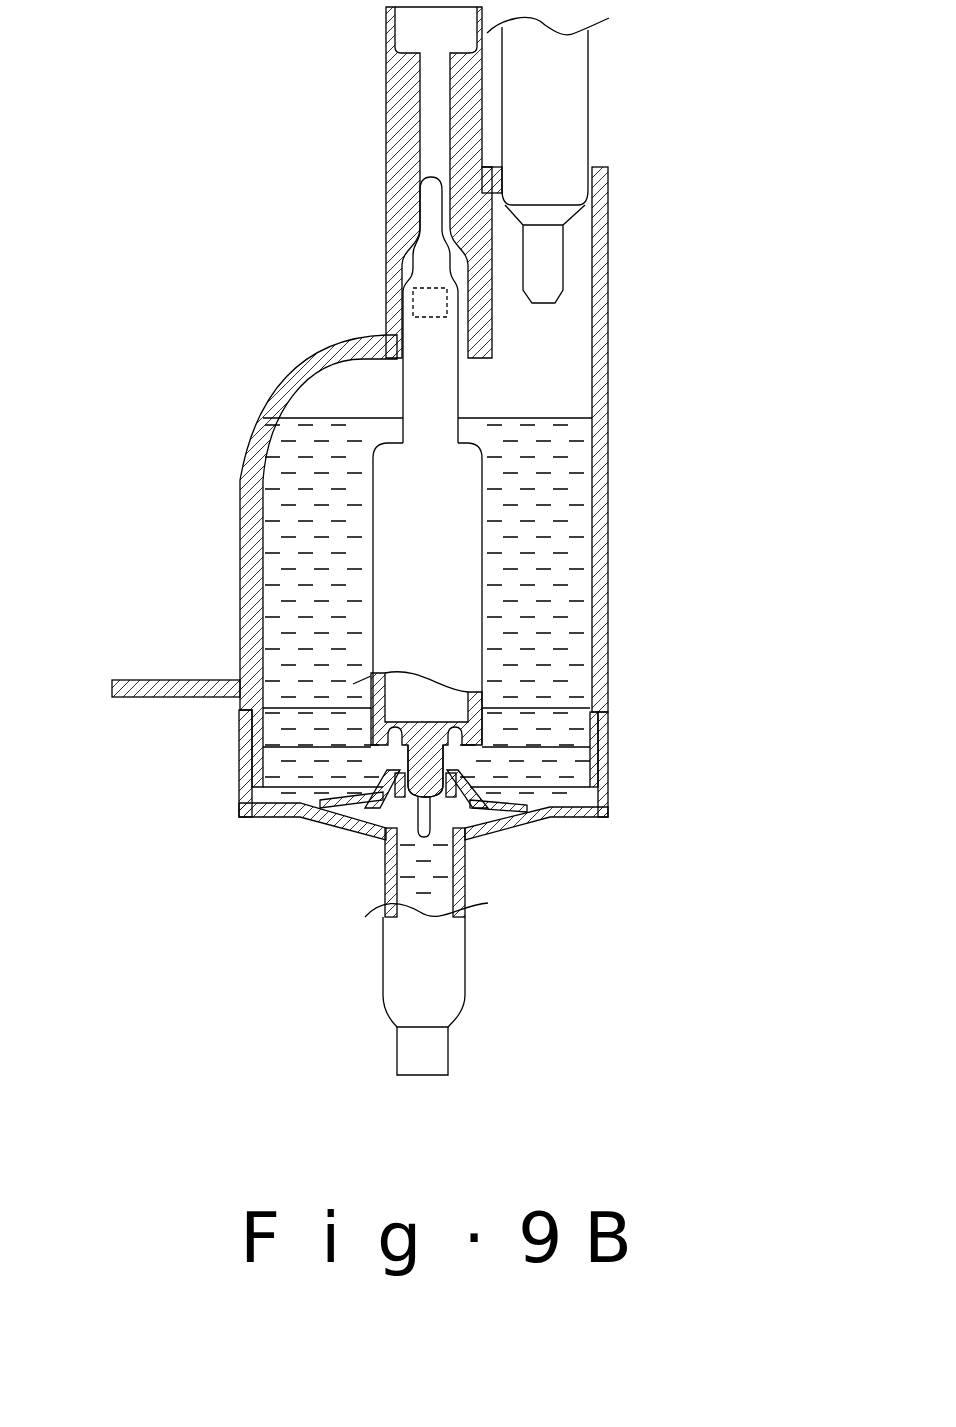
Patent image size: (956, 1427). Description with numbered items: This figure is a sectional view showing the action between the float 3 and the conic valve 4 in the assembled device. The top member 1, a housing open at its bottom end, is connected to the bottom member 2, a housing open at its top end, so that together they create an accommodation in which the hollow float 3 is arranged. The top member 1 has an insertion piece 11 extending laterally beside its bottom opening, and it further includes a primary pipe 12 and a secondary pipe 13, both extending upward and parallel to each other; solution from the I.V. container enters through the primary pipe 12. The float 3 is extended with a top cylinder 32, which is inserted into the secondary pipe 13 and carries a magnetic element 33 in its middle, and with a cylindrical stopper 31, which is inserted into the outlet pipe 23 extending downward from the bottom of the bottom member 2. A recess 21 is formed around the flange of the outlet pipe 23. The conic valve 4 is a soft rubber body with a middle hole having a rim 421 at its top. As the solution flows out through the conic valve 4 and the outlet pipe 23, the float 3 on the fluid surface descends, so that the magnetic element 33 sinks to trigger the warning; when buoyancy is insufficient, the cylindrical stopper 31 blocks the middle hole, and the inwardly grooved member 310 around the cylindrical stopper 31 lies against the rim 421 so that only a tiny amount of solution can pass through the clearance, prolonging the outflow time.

The top member 1 is at (252, 481).
The bottom member 2 is at (618, 762).
The float 3 is at (430, 530).
The conic valve 4 is at (385, 790).
The insertion piece 11 is at (178, 690).
The primary pipe 12 is at (555, 133).
The secondary pipe 13 is at (402, 118).
The recess 21 is at (378, 813).
The outlet pipe 23 is at (430, 960).
The cylindrical stopper 31 is at (440, 755).
The top cylinder 32 is at (445, 392).
The magnetic element 33 is at (432, 303).
The inwardly grooved member 310 is at (455, 738).
The rim 421 is at (395, 768).